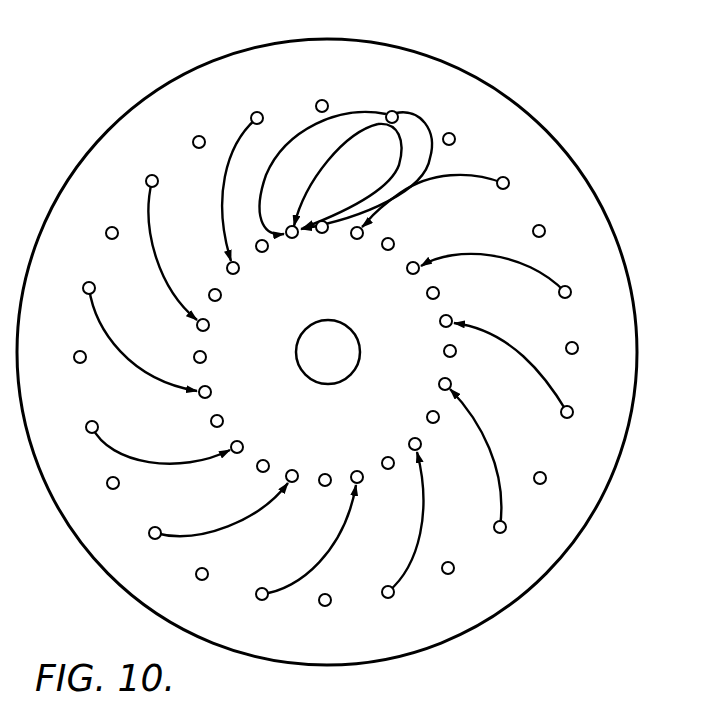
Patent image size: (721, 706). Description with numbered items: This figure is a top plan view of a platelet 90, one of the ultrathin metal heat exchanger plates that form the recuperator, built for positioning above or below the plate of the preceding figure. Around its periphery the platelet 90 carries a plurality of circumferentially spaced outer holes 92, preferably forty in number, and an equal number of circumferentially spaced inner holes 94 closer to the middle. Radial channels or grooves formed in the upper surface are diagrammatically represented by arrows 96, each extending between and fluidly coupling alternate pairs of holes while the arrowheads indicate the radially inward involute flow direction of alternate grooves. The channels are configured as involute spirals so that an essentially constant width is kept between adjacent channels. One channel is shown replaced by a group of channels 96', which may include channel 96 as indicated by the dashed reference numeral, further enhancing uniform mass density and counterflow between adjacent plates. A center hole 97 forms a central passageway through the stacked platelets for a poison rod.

The platelet 90 is at (559, 134).
The outer holes 92 is at (578, 352).
The inner holes 94 is at (440, 325).
The channels 96 is at (383, 326).
The group of channels 96' is at (381, 138).
The center hole 97 is at (334, 320).